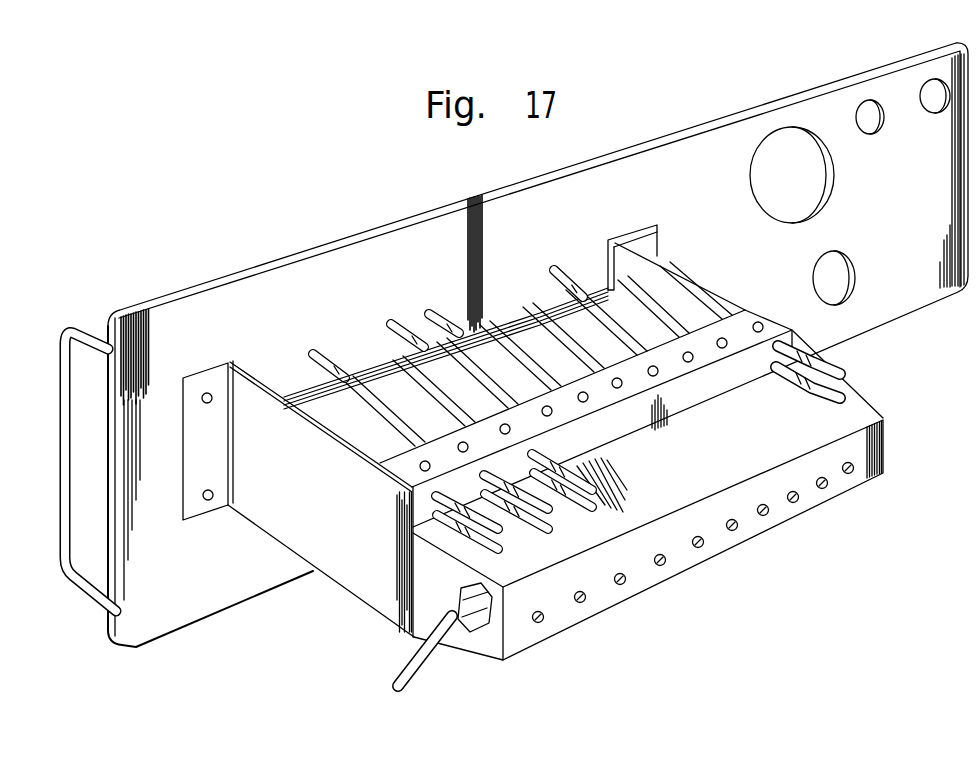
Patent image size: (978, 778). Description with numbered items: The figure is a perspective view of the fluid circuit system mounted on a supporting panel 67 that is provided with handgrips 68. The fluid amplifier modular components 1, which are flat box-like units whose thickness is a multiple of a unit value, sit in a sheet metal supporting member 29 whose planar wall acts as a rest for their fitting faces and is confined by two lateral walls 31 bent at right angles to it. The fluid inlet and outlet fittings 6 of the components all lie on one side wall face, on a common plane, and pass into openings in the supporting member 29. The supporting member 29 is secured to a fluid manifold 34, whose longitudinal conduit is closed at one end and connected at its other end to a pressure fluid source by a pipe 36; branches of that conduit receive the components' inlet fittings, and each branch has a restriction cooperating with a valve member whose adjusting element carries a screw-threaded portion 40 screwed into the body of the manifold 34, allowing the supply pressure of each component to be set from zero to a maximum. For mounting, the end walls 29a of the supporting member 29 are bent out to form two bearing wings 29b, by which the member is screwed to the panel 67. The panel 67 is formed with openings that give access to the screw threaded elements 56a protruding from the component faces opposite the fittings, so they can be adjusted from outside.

The panel 67 is at (222, 300).
The handgrips 68 is at (72, 442).
The supporting member 29 is at (505, 463).
The end walls 29a is at (260, 500).
The bearing wings 29b is at (200, 428).
The lateral walls 31 is at (538, 368).
The fluid manifold 34 is at (648, 498).
The fluid amplifier modular components 1 is at (382, 380).
The screw threaded elements 56a is at (411, 326).
The fluid inlet and outlet fittings 6 is at (540, 463).
The screw-threaded portion 40 is at (586, 596).
The pipe 36 is at (415, 677).